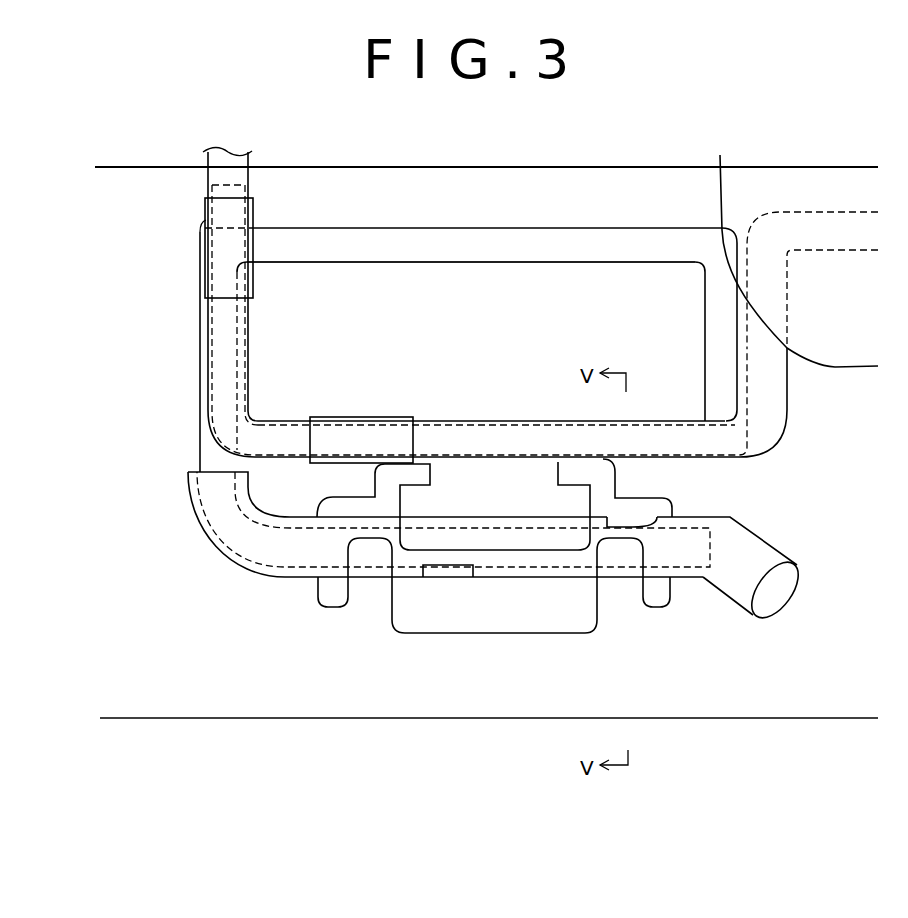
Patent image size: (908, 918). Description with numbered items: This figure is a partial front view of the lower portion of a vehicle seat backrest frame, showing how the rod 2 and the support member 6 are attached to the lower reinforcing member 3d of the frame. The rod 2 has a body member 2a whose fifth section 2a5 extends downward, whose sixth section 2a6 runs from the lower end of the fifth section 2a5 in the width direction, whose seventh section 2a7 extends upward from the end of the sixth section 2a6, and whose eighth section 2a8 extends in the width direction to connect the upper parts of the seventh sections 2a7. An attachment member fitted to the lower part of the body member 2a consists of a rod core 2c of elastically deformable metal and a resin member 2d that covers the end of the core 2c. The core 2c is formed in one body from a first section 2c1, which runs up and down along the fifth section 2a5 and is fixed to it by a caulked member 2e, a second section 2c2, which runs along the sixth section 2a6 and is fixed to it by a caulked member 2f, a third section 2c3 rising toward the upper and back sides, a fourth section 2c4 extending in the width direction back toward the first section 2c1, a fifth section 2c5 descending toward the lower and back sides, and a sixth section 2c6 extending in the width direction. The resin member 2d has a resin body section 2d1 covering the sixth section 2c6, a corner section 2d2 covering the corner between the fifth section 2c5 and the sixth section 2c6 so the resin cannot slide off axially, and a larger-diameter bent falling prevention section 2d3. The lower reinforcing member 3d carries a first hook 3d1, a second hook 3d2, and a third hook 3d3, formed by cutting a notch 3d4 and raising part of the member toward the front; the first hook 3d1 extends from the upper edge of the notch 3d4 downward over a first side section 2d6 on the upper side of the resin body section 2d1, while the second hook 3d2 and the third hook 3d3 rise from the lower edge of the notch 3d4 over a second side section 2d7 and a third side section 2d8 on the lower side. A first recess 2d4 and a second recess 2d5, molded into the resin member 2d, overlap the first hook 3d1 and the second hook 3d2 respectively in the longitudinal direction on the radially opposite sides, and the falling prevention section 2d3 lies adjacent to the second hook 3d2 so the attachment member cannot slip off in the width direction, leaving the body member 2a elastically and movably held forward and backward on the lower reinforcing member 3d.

The lower reinforcing member 3d is at (153, 166).
The body member 2a is at (254, 179).
The fifth section 2a5 is at (207, 176).
The sixth section 2a6 is at (500, 438).
The seventh section 2a7 is at (777, 393).
The eighth section 2a8 is at (842, 243).
The rod core 2c is at (443, 226).
The first section 2c1 is at (237, 213).
The second section 2c2 is at (442, 437).
The third section 2c3 is at (717, 318).
The fourth section 2c4 is at (473, 253).
The fifth section 2c5 is at (213, 463).
The sixth section 2c6 is at (332, 550).
The caulked member 2e is at (222, 274).
The rod 2 is at (150, 256).
The support member 6 is at (714, 162).
The caulked member 2f is at (360, 437).
The resin member 2d is at (216, 553).
The resin body section 2d1 is at (278, 566).
The corner section 2d2 is at (195, 503).
The falling prevention section 2d3 is at (773, 558).
The first recess 2d4 is at (455, 566).
The second recess 2d5 is at (663, 513).
The first side section 2d6 is at (467, 517).
The second side section 2d7 is at (612, 573).
The third side section 2d8 is at (378, 572).
The first hook 3d1 is at (582, 493).
The second hook 3d2 is at (628, 592).
The third hook 3d3 is at (365, 595).
The notch 3d4 is at (513, 633).